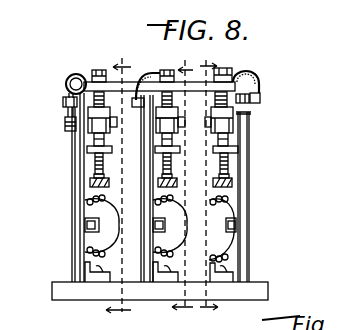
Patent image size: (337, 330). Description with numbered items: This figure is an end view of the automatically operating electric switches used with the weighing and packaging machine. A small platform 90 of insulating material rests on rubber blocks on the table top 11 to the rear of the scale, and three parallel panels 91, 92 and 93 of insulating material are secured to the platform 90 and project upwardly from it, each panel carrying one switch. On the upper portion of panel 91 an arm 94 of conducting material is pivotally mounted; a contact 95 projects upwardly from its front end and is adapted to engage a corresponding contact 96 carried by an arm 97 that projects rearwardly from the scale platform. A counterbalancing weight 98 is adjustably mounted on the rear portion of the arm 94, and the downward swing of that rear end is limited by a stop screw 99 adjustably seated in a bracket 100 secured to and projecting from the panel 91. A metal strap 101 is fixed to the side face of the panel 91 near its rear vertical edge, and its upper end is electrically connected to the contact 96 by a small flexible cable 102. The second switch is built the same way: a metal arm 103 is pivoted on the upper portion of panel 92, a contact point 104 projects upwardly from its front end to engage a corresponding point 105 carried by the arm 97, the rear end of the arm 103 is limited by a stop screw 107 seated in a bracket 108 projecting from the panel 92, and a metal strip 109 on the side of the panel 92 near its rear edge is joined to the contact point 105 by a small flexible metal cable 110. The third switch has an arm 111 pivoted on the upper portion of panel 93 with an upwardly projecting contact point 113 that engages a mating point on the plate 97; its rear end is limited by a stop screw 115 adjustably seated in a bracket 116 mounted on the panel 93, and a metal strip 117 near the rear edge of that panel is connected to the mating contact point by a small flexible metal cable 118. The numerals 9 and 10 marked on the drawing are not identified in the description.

The section line 9 is at (118, 190).
The section line 10 is at (182, 191).
The table top 11 is at (211, 191).
The platform 90 is at (64, 283).
The panel 91 is at (78, 254).
The panel 92 is at (147, 248).
The panel 93 is at (243, 259).
The arm 94 is at (67, 125).
The contact 95 is at (63, 105).
The contact 96 is at (67, 88).
The arm 97 is at (116, 84).
The counterbalancing weight 98 is at (68, 113).
The stop screw 99 is at (94, 168).
The bracket 100 is at (88, 151).
The metal strap 101 is at (73, 200).
The flexible cable 102 is at (68, 76).
The metal arm 103 is at (178, 117).
The contact point 104 is at (177, 107).
The contact point 105 is at (172, 97).
The stop screw 107 is at (176, 164).
The bracket 108 is at (176, 141).
The metal strip 109 is at (105, 204).
The flexible metal cable 110 is at (156, 69).
The arm 111 is at (245, 111).
The contact point 113 is at (262, 99).
The stop screw 115 is at (229, 170).
The bracket 116 is at (238, 151).
The metal strip 117 is at (260, 95).
The flexible metal cable 118 is at (262, 81).